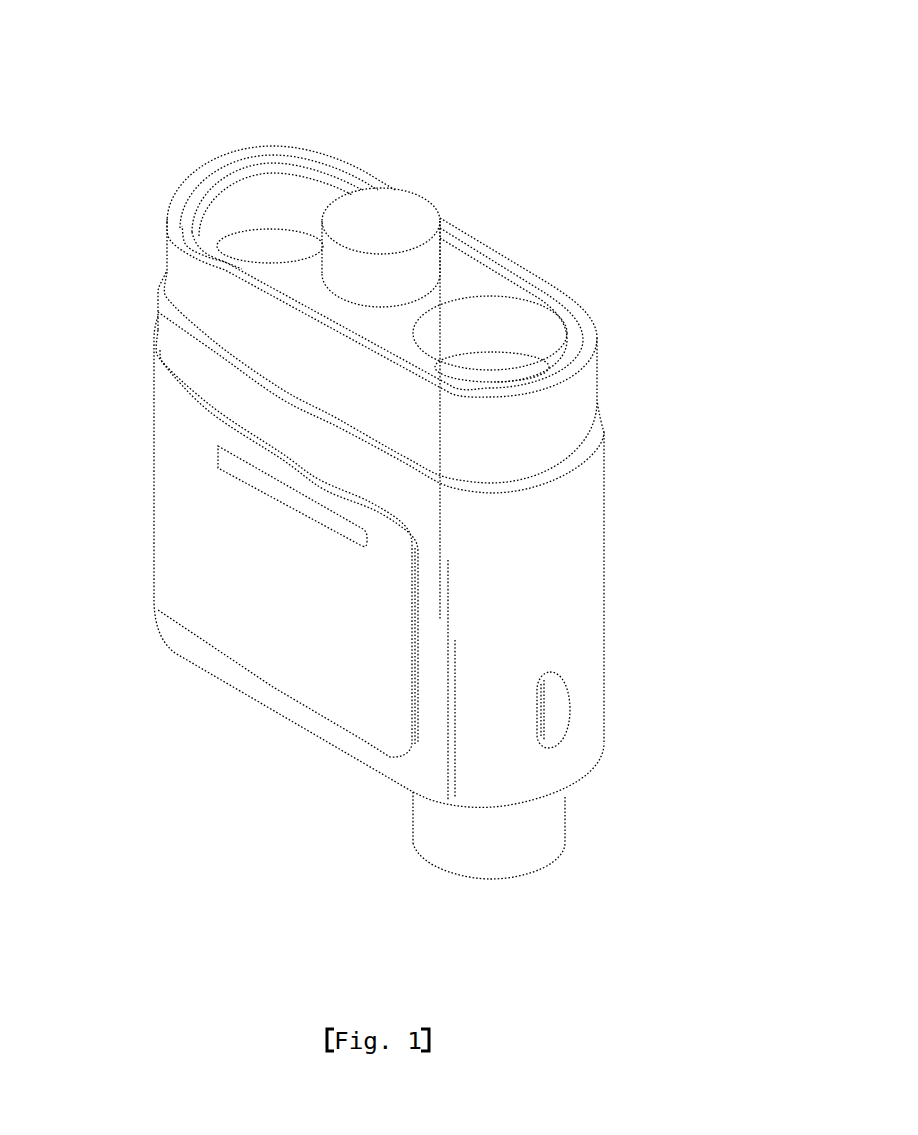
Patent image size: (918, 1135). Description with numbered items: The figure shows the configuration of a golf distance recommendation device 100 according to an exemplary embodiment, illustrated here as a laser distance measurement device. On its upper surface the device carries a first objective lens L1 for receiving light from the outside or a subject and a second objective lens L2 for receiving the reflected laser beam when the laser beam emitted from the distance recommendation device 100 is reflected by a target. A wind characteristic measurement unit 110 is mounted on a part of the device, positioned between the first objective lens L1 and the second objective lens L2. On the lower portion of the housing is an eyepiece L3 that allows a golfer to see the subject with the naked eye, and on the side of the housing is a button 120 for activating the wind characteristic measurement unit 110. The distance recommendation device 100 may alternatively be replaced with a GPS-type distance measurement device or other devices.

The distance recommendation device 100 is at (142, 130).
The wind characteristic measurement unit 110 is at (393, 210).
The button 120 is at (553, 717).
The first objective lens L1 is at (500, 363).
The second objective lens L2 is at (276, 245).
The eyepiece L3 is at (512, 840).